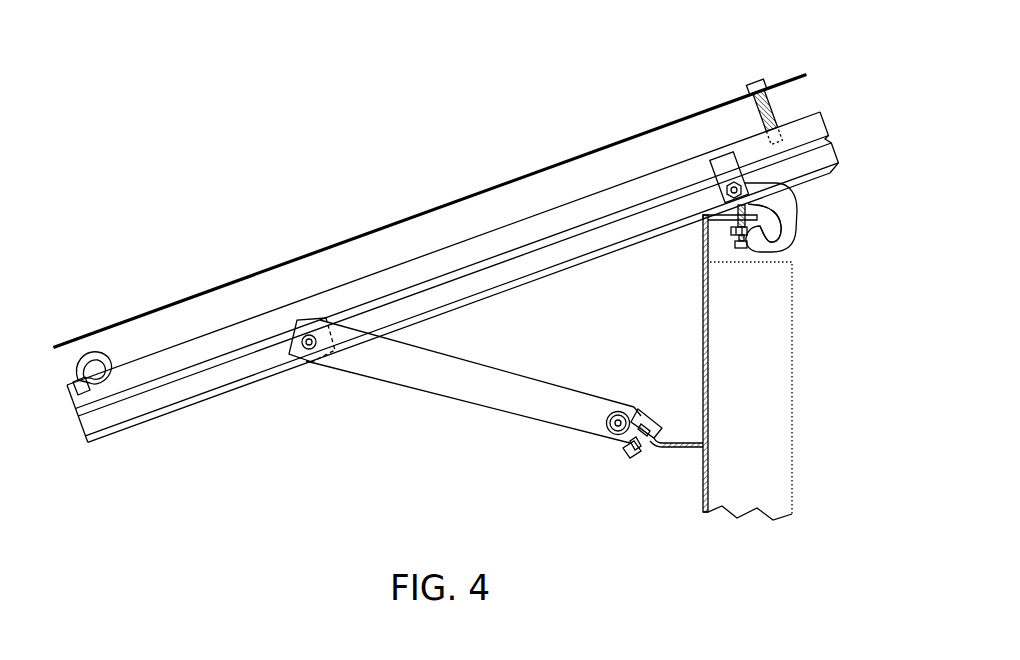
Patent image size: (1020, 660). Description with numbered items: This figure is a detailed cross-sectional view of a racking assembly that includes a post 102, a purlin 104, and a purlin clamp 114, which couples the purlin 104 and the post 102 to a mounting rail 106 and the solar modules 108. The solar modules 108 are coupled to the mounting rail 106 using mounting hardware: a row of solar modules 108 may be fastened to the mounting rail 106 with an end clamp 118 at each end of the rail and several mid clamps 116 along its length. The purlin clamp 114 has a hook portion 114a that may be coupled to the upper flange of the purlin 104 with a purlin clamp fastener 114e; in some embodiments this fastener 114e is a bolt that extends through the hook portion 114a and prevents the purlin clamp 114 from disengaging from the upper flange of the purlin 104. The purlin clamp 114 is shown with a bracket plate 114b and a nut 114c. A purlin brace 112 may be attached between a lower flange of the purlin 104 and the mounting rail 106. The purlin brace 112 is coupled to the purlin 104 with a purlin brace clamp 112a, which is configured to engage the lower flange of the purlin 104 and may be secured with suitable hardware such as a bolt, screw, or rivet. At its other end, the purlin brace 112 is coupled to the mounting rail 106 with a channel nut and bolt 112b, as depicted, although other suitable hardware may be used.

The post 102 is at (708, 487).
The purlin 104 is at (702, 327).
The mounting rail 106 is at (523, 287).
The solar module 108 is at (259, 272).
The purlin brace 112 is at (449, 401).
The purlin brace clamp 112a is at (623, 452).
The channel nut and bolt 112b is at (290, 338).
The purlin clamp 114 is at (803, 240).
The hook portion 114a is at (795, 250).
The bracket plate 114b is at (708, 170).
The nut 114c is at (777, 197).
The purlin clamp fastener 114e is at (737, 246).
The mid clamp 116 is at (746, 88).
The end clamp 118 is at (107, 356).